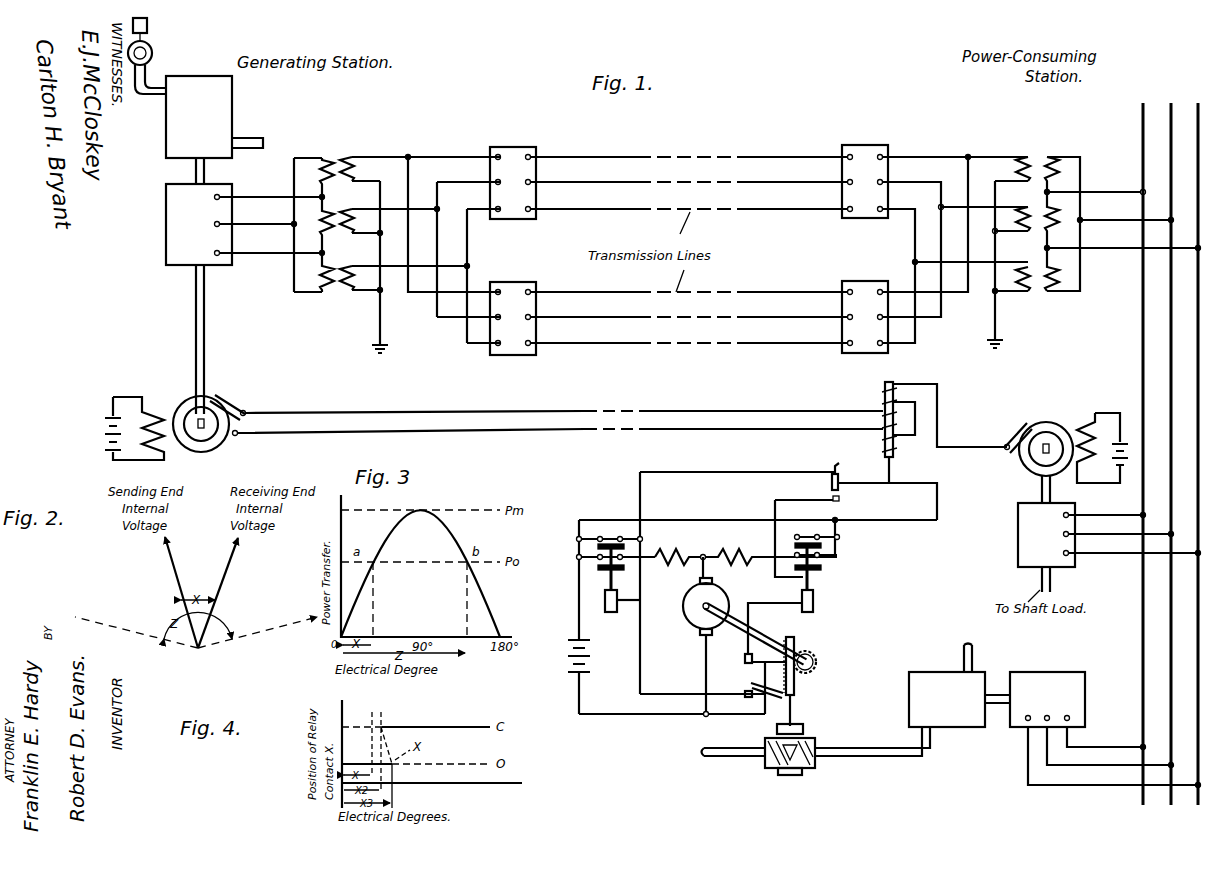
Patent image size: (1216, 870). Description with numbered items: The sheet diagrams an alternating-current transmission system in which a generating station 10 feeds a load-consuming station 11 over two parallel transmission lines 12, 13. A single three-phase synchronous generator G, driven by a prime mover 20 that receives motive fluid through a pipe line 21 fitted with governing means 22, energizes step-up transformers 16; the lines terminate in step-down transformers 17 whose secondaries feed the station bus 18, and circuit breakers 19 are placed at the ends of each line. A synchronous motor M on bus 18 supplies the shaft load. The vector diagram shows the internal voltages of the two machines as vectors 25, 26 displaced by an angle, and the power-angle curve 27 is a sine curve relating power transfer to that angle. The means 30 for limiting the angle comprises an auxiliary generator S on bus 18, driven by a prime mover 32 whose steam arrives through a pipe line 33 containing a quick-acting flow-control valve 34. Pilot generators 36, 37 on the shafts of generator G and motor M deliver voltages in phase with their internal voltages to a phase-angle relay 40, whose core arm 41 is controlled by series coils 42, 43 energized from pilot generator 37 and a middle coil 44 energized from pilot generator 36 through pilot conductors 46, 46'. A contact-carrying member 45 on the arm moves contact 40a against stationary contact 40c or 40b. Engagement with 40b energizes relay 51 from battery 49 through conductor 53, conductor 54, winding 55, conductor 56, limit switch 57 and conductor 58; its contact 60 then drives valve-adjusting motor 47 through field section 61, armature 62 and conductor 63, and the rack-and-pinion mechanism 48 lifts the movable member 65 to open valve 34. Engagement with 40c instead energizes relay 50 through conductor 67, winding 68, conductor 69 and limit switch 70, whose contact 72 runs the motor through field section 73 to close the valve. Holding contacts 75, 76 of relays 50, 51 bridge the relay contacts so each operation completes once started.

In FIG. 1, the generating station 10 is at (191, 286).
In FIG. 1, the three-phase generator G is at (144, 233).
In FIG. 1, the load-consuming station 11 is at (1117, 204).
In FIG. 1, the transmission line 12 is at (689, 167).
In FIG. 1, the transmission line 13 is at (689, 333).
In FIG. 1, the step-up transformers 16 is at (397, 255).
In FIG. 1, the step-down transformers 17 is at (1016, 252).
In FIG. 1, the load-consuming station bus 18 is at (1152, 454).
In FIG. 1, the circuit breakers 19 is at (520, 142).
In FIG. 1, the prime mover 20 is at (233, 115).
In FIG. 1, the pipe line 21 is at (150, 22).
In FIG. 1, the governing means 22 is at (152, 50).
In FIG. 2, the voltage vector 25 is at (170, 565).
In FIG. 2, the voltage vector 26 is at (240, 571).
In FIG. 3, the power-angle curve 27 is at (450, 522).
In FIG. 1, the phase-displacement limiting means 30 is at (817, 571).
In FIG. 1, the prime mover 32 is at (952, 727).
In FIG. 1, the pipe line 33 is at (735, 770).
In FIG. 1, the flow-control valve 34 is at (790, 763).
In FIG. 1, the pilot generator 36 is at (175, 417).
In FIG. 1, the pilot generator 37 is at (1066, 449).
In FIG. 1, the phase-angle-responsive relay 40 is at (865, 419).
In FIG. 1, the movable contact member 40a is at (832, 488).
In FIG. 1, the stationary contact member 40b is at (839, 498).
In FIG. 1, the stationary contact member 40c is at (739, 472).
In FIG. 1, the movable core arm 41 is at (895, 390).
In FIG. 1, the coil 42 is at (884, 387).
In FIG. 1, the coil 43 is at (884, 442).
In FIG. 1, the coil 44 is at (884, 414).
In FIG. 1, the contact-carrying member 45 is at (876, 484).
In FIG. 1, the pilot conductor 46 is at (560, 440).
In FIG. 1, the pilot conductor 46' is at (564, 403).
In FIG. 1, the valve-adjusting motor 47 is at (695, 637).
In FIG. 1, the rack-and-pinion mechanism 48 is at (794, 682).
In FIG. 1, the battery 49 is at (568, 665).
In FIG. 1, the relay 50 is at (606, 568).
In FIG. 1, the relay 51 is at (825, 566).
In FIG. 1, the conductor 53 is at (708, 508).
In FIG. 1, the conductor 54 is at (775, 503).
In FIG. 1, the winding 55 is at (801, 594).
In FIG. 1, the conductor 56 is at (749, 622).
In FIG. 1, the limit switch 57 is at (745, 664).
In FIG. 1, the conductor 58 is at (684, 714).
In FIG. 1, the contact 60 is at (823, 569).
In FIG. 1, the motor field winding section 61 is at (742, 545).
In FIG. 1, the motor armature 62 is at (722, 603).
In FIG. 1, the conductor 63 is at (704, 666).
In FIG. 1, the movable member 65 is at (792, 714).
In FIG. 1, the conductor 67 is at (742, 470).
In FIG. 1, the winding 68 is at (633, 604).
In FIG. 1, the conductor 69 is at (645, 690).
In FIG. 1, the limit switch 70 is at (752, 702).
In FIG. 1, the contact 72 is at (598, 569).
In FIG. 1, the motor field winding section 73 is at (688, 545).
In FIG. 1, the holding-circuit contact member 75 is at (611, 544).
In FIG. 1, the holding-circuit contact member 76 is at (807, 543).
In FIG. 1, the synchronous motor M is at (1018, 517).
In FIG. 1, the generator S is at (1075, 665).